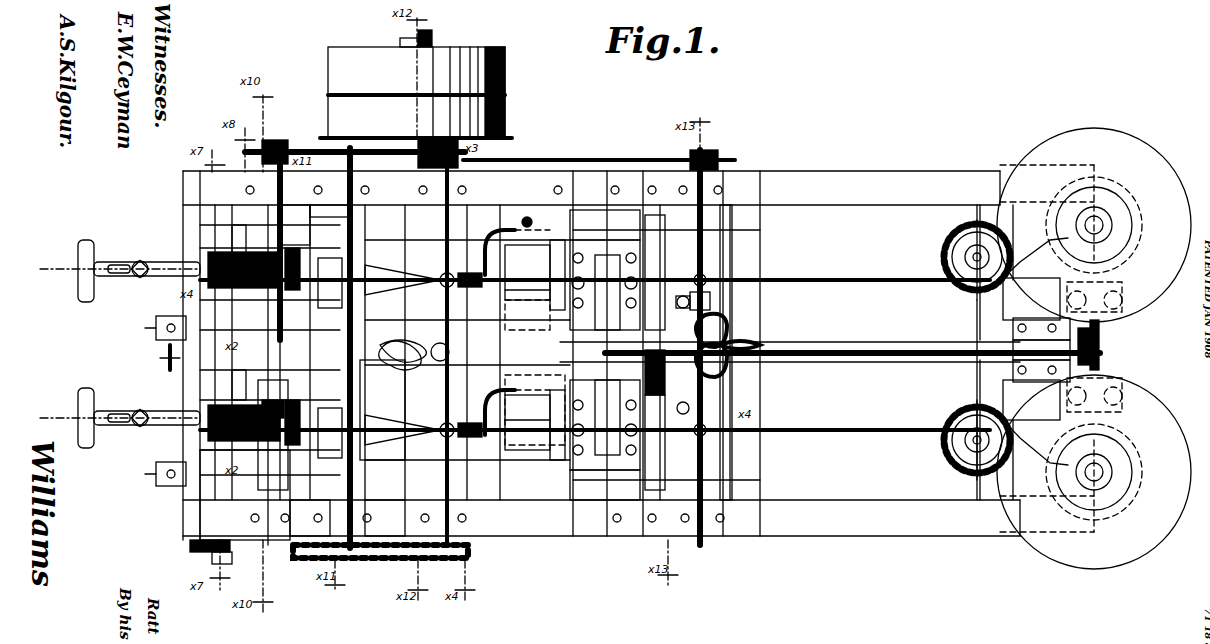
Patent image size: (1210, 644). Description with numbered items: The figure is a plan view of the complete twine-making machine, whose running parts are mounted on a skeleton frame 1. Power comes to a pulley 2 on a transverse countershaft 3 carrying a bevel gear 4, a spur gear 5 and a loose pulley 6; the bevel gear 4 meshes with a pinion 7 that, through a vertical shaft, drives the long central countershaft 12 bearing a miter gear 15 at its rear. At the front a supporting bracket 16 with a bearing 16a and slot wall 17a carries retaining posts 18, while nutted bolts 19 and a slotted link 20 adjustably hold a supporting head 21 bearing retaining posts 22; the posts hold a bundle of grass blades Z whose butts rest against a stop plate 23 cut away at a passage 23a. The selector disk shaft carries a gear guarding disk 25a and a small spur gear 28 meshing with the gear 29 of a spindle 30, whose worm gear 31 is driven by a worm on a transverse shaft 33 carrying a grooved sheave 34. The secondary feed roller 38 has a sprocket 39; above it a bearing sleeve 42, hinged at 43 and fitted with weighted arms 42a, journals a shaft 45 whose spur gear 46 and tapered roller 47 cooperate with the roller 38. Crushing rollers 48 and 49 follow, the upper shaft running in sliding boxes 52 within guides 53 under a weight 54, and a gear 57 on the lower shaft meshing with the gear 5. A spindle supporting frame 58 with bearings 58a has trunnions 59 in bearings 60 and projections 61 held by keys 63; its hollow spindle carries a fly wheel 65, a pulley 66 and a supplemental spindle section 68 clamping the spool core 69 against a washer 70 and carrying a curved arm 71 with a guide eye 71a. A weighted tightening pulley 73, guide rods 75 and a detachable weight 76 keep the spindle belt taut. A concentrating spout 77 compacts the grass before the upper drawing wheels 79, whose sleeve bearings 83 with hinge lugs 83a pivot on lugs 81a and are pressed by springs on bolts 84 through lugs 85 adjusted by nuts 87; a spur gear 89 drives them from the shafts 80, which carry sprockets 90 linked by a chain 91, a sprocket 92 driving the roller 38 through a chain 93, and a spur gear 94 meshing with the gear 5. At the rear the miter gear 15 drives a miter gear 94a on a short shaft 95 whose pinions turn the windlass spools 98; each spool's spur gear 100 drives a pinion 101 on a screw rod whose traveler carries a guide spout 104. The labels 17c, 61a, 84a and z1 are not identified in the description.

The skeleton frame 1 is at (880, 178).
The pulley 2 is at (505, 100).
The countershaft 3 is at (432, 31).
The bevel gear 4 is at (357, 337).
The spur gear 5 is at (400, 558).
The loose pulley 6 is at (505, 65).
The pinion 7 is at (396, 362).
The long countershaft 12 is at (795, 345).
The miter gear 15 is at (1100, 333).
The supporting bracket 16 is at (200, 296).
The bearing 16a is at (200, 460).
The slot wall 17a is at (200, 438).
The link 17c is at (165, 370).
The upright retaining posts 18 is at (240, 240).
The nutted bolts 19 is at (137, 428).
The slotted link 20 is at (162, 410).
The supporting head 21 is at (90, 440).
The upright retaining posts 22 is at (86, 243).
The stop plate 23 is at (323, 446).
The cut-away passage 23a is at (319, 212).
The gear guarding disk 25a is at (215, 265).
The small spur gear 28 is at (225, 260).
The gear 29 is at (165, 358).
The spindle 30 is at (382, 418).
The worm gear 31 is at (180, 306).
The transverse shaft 33 is at (232, 394).
The grooved sheave 34 is at (212, 556).
The feed roller 38 is at (260, 230).
The sprocket 39 is at (275, 148).
The bearing sleeve 42 is at (168, 470).
The weighted arms 42a is at (156, 332).
The hinge connection 43 is at (307, 488).
The shaft 45 is at (282, 341).
The spur gear 46 is at (238, 530).
The tapered feed roller 47 is at (281, 435).
The crushing roller 48 is at (308, 322).
The crushing roller 49 is at (330, 283).
The sliding boxes 52 is at (342, 357).
The guides 53 is at (310, 518).
The weight 54 is at (322, 380).
The gear 57 is at (380, 560).
The spindle supporting frame 58 is at (560, 525).
The bearings 58a is at (580, 468).
The trunnions 59 is at (636, 530).
The bearings 60 is at (611, 556).
The trunnion-like projections 61 is at (578, 520).
The rod end 61a is at (424, 353).
The keys 63 is at (560, 540).
The fly wheel 65 is at (645, 232).
The pulley 66 is at (605, 355).
The supplemental spindle section 68 is at (491, 454).
The spool core 69 is at (535, 275).
The washer 70 is at (535, 425).
The curved flier arm 71 is at (505, 212).
The guide eye 71a is at (530, 218).
The weighted tightening pulley 73 is at (629, 378).
The guide rods 75 is at (447, 362).
The detachable weight 76 is at (440, 255).
The concentrating spout 77 is at (595, 355).
The upper drawing wheels 79 is at (742, 442).
The transverse shafts 80 is at (450, 232).
The hinge lugs 81a is at (742, 335).
The sleeve bearings 83 is at (715, 300).
The hinge lugs 83a is at (735, 340).
The bolts 84 is at (689, 303).
The bearing 84a is at (730, 226).
The lugs 85 is at (682, 404).
The nuts 87 is at (527, 315).
The spur gear 89 is at (455, 330).
The sprockets 90 is at (718, 158).
The sprocket chain 91 is at (702, 152).
The sprocket 92 is at (495, 135).
The sprocket chain 93 is at (312, 150).
The spur gear 94 is at (468, 552).
The miter gear 94a is at (1100, 358).
The short transverse shaft 95 is at (1125, 362).
The windlass spools 98 is at (1035, 150).
The spur gear 100 is at (990, 238).
The spur pinion 101 is at (940, 462).
The guide spout 104 is at (960, 290).
The section line z1 is at (872, 367).
The grass blades Z is at (58, 280).